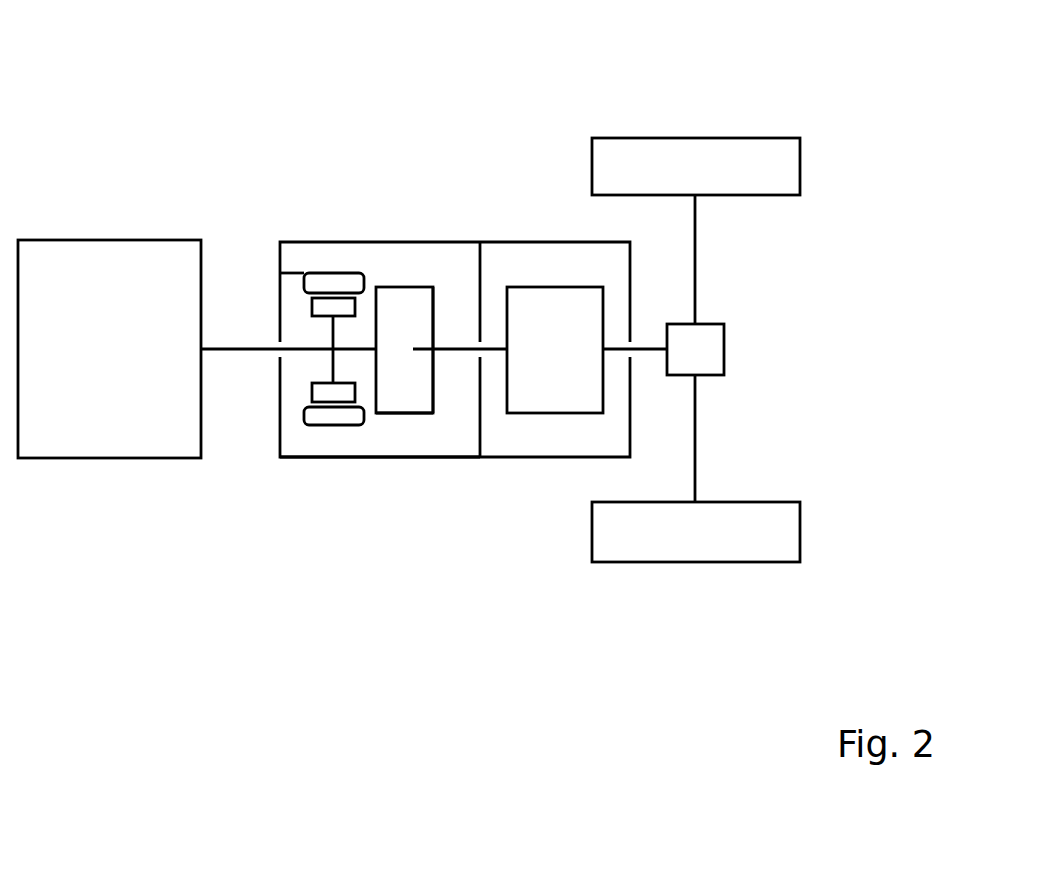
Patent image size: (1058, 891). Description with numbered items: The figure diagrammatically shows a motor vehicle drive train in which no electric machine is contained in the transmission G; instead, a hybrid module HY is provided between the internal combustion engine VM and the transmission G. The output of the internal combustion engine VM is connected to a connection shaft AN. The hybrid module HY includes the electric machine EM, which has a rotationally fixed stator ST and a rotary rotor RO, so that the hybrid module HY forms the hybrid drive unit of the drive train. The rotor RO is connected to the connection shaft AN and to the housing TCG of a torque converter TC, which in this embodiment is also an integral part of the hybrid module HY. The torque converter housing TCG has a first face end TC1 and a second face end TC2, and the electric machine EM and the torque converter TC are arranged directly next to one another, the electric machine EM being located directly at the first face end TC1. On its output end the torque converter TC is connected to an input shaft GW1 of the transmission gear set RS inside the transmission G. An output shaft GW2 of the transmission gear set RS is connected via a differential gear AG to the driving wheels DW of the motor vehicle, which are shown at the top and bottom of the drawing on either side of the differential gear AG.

The internal combustion engine VM is at (117, 240).
The first face end TC1 is at (367, 337).
The electric machine EM is at (271, 348).
The torque converter TC is at (462, 348).
The input shaft GW1 is at (453, 348).
The transmission G is at (531, 225).
The transmission gear set RS is at (561, 287).
The driving wheels DW is at (717, 138).
The output shaft GW2 is at (652, 349).
The differential gear AG is at (725, 341).
The connection shaft AN is at (236, 351).
The rotor RO is at (322, 391).
The stator ST is at (333, 416).
The hybrid module HY is at (386, 470).
The housing TCG is at (415, 414).
The second face end TC2 is at (438, 371).